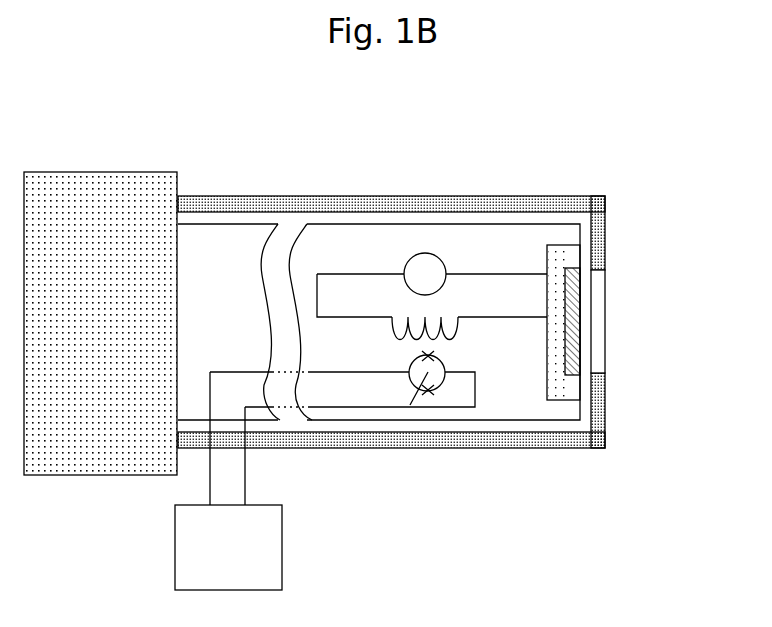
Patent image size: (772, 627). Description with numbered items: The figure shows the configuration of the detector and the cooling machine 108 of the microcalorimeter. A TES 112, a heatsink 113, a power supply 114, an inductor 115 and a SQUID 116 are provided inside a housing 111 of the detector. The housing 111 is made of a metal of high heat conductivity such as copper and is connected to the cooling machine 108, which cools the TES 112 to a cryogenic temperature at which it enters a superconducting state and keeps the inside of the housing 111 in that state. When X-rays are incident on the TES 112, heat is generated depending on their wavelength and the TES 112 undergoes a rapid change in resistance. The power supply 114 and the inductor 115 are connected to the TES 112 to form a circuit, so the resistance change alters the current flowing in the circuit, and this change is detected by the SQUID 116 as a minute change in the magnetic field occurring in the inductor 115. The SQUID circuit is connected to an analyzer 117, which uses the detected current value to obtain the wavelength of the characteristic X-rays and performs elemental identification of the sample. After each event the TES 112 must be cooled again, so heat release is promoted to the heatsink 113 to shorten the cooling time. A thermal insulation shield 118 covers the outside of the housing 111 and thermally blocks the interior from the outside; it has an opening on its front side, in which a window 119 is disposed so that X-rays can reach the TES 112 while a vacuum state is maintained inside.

The cooling machine 108 is at (100, 430).
The housing 111 is at (515, 225).
The TES 112 is at (570, 353).
The heatsink 113 is at (562, 388).
The power supply 114 is at (424, 253).
The inductor 115 is at (460, 320).
The SQUID 116 is at (412, 401).
The analyzer 117 is at (242, 537).
The thermal insulation shield 118 is at (605, 220).
The window 119 is at (605, 316).